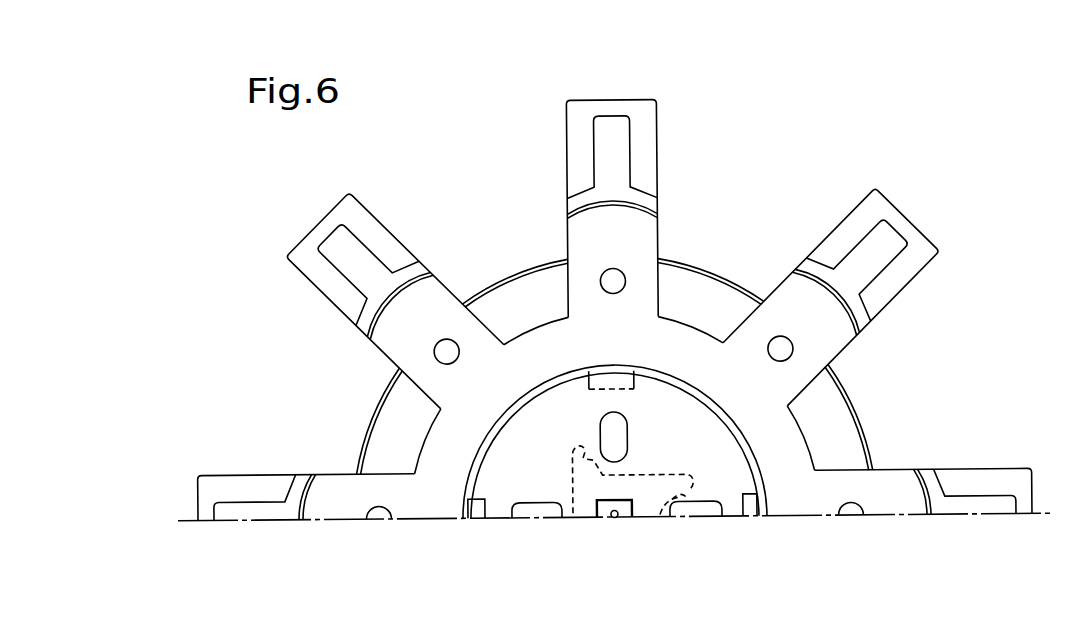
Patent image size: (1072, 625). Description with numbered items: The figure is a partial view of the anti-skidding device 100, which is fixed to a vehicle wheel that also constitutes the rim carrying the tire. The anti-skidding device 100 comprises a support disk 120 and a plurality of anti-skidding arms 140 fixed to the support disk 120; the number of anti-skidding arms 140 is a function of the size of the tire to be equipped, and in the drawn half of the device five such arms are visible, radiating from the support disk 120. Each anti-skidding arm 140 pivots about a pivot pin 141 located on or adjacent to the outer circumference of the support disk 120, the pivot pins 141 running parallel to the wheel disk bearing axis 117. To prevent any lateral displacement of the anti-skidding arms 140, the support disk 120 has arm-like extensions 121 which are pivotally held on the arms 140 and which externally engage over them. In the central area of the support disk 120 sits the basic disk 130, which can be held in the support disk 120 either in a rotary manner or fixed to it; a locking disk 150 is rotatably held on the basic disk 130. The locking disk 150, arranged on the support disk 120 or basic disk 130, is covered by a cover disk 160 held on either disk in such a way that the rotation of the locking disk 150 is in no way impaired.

The anti-skidding device 100 is at (926, 330).
The wheel disk bearing axis 117 is at (614, 518).
The support disk 120 is at (797, 447).
The arm-like extensions 121 is at (438, 293).
The basic disk 130 is at (731, 500).
The anti-skidding arms 140 is at (376, 228).
The pivot pins 141 is at (610, 282).
The locking disk 150 is at (582, 507).
The cover disk 160 is at (497, 503).